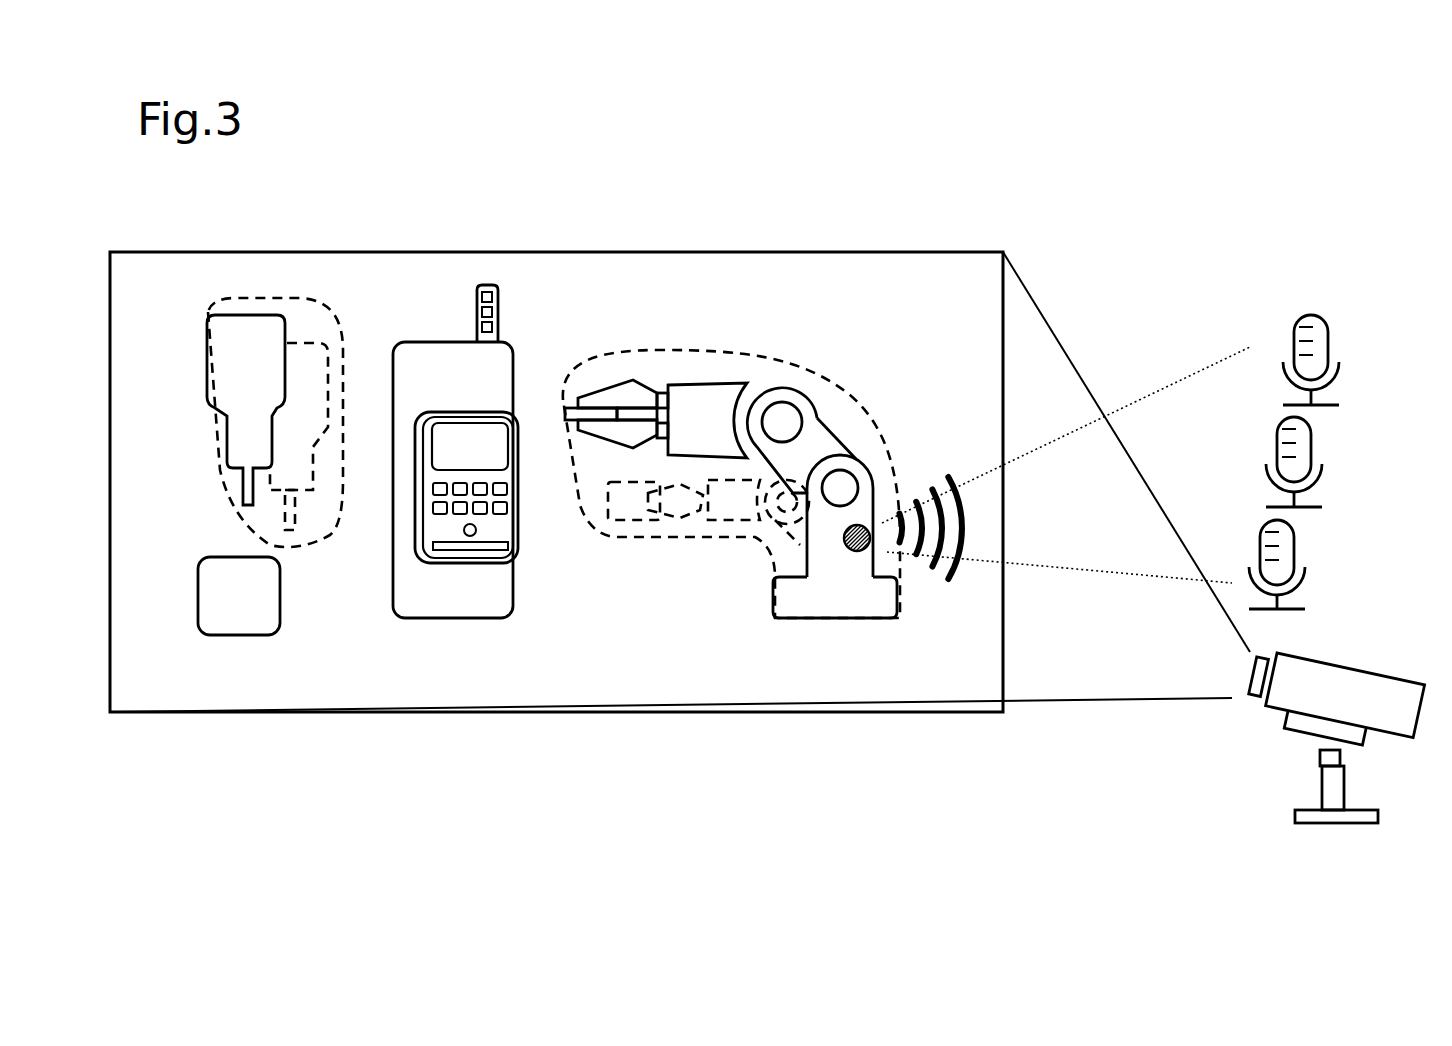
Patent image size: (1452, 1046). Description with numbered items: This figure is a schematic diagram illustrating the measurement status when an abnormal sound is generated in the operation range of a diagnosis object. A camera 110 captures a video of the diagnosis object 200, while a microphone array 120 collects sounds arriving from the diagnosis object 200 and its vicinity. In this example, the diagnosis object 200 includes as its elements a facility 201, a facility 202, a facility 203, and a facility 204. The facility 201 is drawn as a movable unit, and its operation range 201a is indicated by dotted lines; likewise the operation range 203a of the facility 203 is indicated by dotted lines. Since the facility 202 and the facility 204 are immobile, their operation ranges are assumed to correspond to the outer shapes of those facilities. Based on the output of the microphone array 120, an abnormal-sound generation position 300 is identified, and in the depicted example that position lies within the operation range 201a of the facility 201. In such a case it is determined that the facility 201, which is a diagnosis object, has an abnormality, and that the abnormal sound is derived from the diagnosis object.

The camera 110 is at (1403, 673).
The microphone array 120 is at (1268, 302).
The diagnosis object 200 is at (440, 254).
The facility 201 is at (797, 403).
The operation range 201a is at (728, 358).
The facility 202 is at (513, 348).
The facility 203 is at (210, 320).
The operation range 203a is at (217, 488).
The facility 204 is at (267, 637).
The abnormal-sound generation position 300 is at (857, 552).